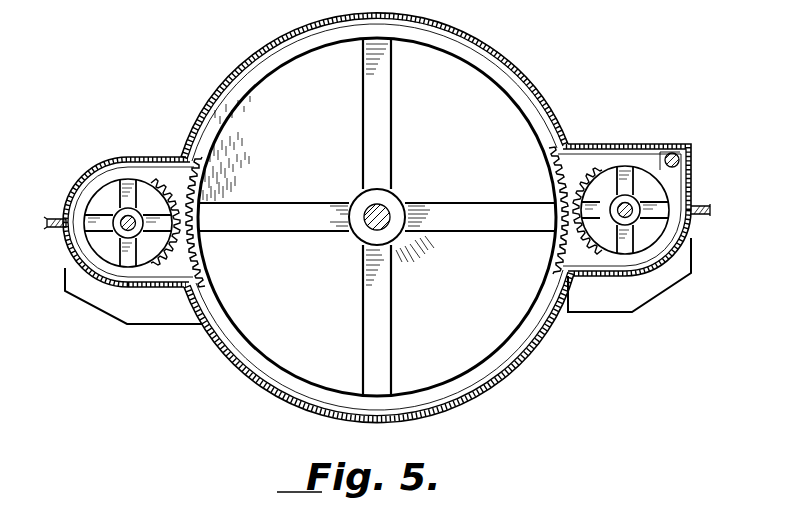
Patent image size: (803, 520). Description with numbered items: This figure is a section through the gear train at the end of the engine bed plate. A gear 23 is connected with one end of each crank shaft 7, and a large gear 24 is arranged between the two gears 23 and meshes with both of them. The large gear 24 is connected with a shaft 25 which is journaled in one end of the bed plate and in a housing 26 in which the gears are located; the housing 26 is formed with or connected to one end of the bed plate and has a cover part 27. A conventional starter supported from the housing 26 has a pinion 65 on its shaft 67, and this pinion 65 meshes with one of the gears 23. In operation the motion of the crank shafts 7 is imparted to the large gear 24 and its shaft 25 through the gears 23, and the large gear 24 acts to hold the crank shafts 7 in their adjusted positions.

The crank shaft 7 is at (122, 236).
The gear 23 is at (82, 229).
The large gear 24 is at (245, 345).
The shaft 25 is at (386, 212).
The housing 26 is at (531, 350).
The cover part 27 is at (506, 63).
The pinion 65 is at (684, 175).
The starter shaft 67 is at (666, 151).